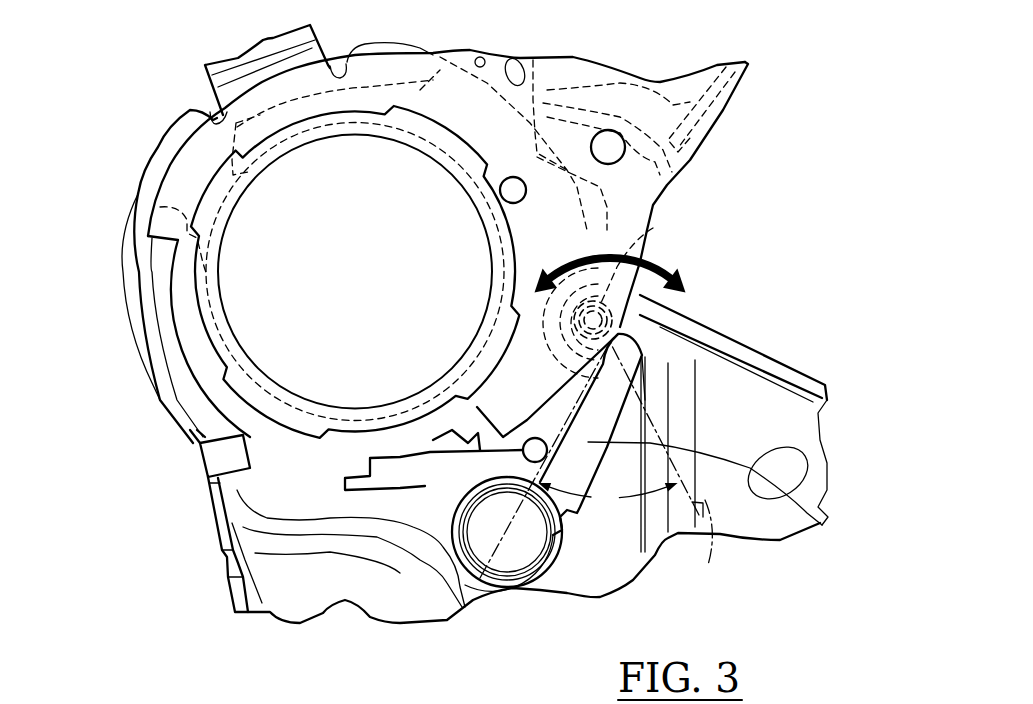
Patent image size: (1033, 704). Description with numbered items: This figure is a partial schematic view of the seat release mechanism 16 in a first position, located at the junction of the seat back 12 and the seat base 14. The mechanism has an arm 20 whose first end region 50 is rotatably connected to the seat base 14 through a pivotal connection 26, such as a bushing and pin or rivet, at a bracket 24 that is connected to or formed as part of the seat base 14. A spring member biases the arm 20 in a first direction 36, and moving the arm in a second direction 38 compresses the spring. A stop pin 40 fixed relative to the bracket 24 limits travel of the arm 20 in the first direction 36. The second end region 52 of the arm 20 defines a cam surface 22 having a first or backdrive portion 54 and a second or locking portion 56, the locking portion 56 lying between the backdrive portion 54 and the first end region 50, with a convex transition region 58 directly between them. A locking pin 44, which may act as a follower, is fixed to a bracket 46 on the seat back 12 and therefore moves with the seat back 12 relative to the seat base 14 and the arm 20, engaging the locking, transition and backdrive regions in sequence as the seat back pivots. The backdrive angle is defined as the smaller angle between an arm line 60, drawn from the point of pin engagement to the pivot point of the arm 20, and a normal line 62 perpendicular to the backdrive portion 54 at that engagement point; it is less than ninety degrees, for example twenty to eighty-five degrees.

The seat release mechanism 16 is at (86, 74).
The seat back 12 is at (598, 80).
The bracket 46 is at (577, 143).
The seat base 14 is at (163, 461).
The bracket 24 is at (230, 458).
The arm 20 is at (820, 527).
The cam surface 22 is at (565, 343).
The pivotal connection 26 is at (527, 560).
The first direction 36 is at (565, 271).
The second direction 38 is at (653, 271).
The stop pin 40 is at (405, 437).
The locking pin 44 is at (653, 228).
The first end region 50 is at (440, 553).
The second end region 52 is at (648, 333).
The backdrive portion 54 is at (640, 348).
The locking portion 56 is at (593, 370).
The transition region 58 is at (490, 300).
The arm line 60 is at (483, 600).
The normal line 62 is at (680, 478).